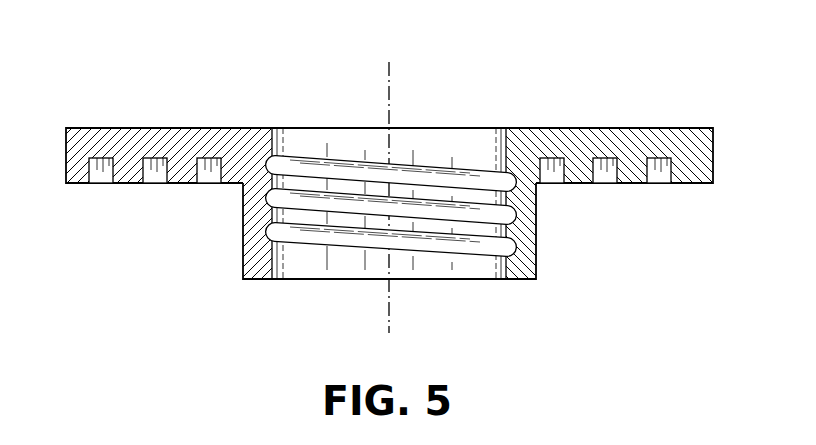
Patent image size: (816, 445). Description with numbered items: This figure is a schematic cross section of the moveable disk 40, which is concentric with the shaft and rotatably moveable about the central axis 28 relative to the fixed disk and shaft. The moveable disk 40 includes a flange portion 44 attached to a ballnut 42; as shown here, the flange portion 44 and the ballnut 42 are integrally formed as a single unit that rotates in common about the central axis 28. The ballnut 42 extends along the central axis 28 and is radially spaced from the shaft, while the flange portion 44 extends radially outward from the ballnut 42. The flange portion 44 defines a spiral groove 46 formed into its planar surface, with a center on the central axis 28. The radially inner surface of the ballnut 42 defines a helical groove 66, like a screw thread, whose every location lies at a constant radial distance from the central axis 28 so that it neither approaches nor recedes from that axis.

The central axis 28 is at (389, 89).
The moveable disk 40 is at (416, 181).
The ballnut 42 is at (527, 253).
The flange portion 44 is at (702, 127).
The spiral groove 46 is at (145, 172).
The helical groove 66 is at (298, 240).